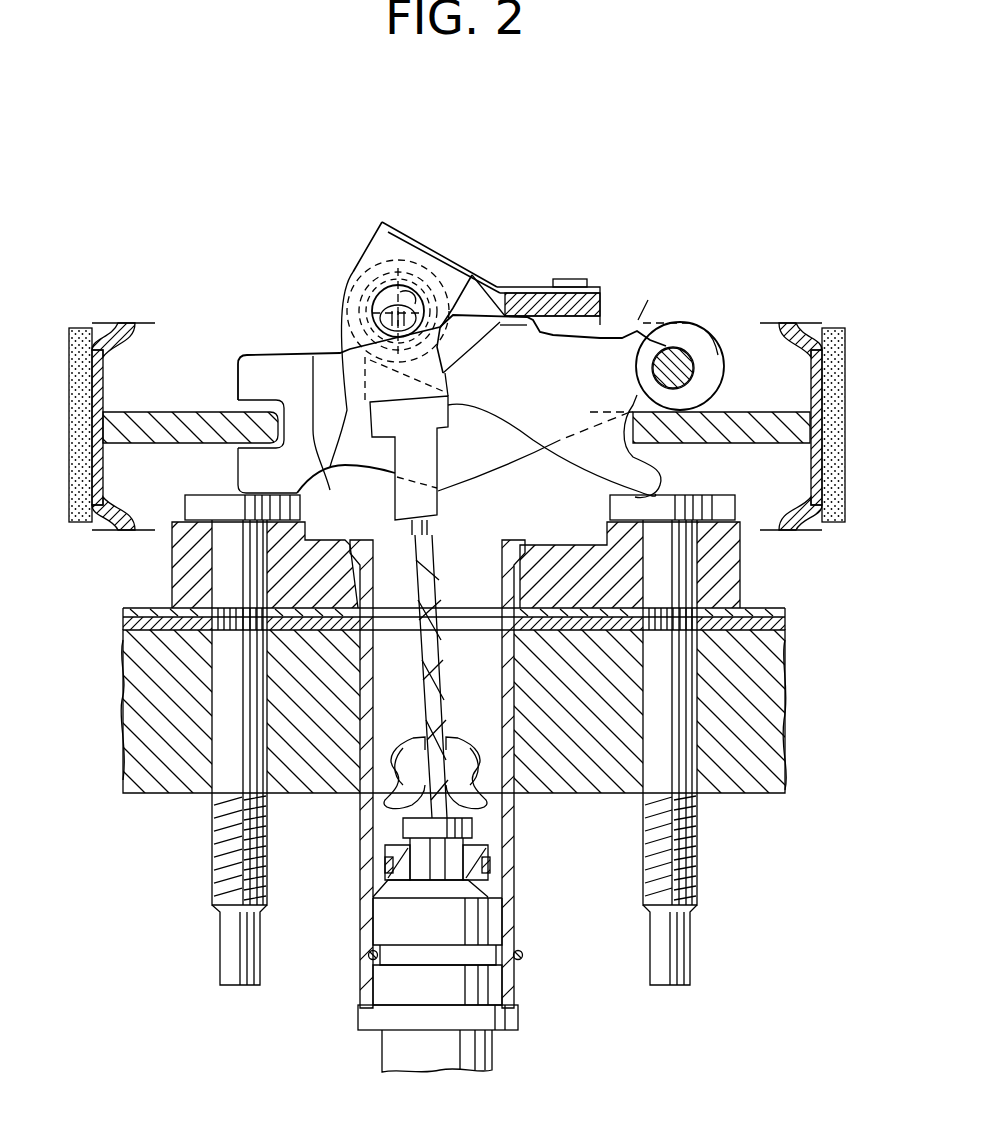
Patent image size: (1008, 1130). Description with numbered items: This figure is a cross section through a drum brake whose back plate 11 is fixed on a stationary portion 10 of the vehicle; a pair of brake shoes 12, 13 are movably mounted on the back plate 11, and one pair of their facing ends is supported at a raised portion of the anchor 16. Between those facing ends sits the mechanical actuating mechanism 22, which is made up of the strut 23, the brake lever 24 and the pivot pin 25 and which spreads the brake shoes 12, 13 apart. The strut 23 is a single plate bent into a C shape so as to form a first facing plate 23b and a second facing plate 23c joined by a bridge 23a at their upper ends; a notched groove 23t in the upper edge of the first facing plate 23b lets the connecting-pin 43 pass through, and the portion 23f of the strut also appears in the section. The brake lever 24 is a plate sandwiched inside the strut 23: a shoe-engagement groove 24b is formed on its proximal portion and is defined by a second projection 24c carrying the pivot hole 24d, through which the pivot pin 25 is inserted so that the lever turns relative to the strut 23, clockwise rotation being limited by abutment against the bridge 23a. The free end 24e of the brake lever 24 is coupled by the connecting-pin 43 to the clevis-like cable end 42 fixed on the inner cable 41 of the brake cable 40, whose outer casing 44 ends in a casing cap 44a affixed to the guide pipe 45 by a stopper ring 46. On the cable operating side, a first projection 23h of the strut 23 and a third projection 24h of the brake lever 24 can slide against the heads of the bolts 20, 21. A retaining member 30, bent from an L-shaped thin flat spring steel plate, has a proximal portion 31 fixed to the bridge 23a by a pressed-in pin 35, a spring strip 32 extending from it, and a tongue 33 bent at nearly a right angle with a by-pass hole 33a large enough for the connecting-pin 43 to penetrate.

The stationary portion 10 is at (740, 797).
The back plate 11 is at (123, 612).
The brake shoe 12 is at (105, 320).
The brake shoe 13 is at (835, 320).
The anchor 16 is at (752, 568).
The bolt 20 is at (212, 840).
The bolt 21 is at (697, 883).
The mechanical actuating mechanism 22 is at (650, 210).
The strut 23 is at (270, 350).
The bridge 23a is at (600, 300).
The first facing plate 23b is at (325, 492).
The second facing plate 23c is at (533, 452).
The lever bar 23f is at (270, 425).
The first projection 23h is at (245, 497).
The notched groove 23t is at (380, 318).
The brake lever 24 is at (705, 320).
The shoe-engagement groove 24b is at (702, 410).
The second projection 24c is at (712, 338).
The pivot hole 24d is at (691, 355).
The free end 24e is at (368, 286).
The third projection 24h is at (660, 500).
The pivot pin 25 is at (672, 357).
The retaining member 30 is at (441, 242).
The proximal portion 31 is at (537, 290).
The spring strip 32 is at (492, 288).
The tongue 33 is at (390, 233).
The by-pass hole 33a is at (403, 288).
The pin 35 is at (572, 278).
The brake cable 40 is at (510, 1058).
The inner cable 41 is at (422, 790).
The cable end 42 is at (490, 470).
The connecting-pin 43 is at (372, 280).
The outer casing 44 is at (392, 1052).
The casing cap 44a is at (383, 923).
The guide pipe 45 is at (515, 985).
The stopper ring 46 is at (522, 955).